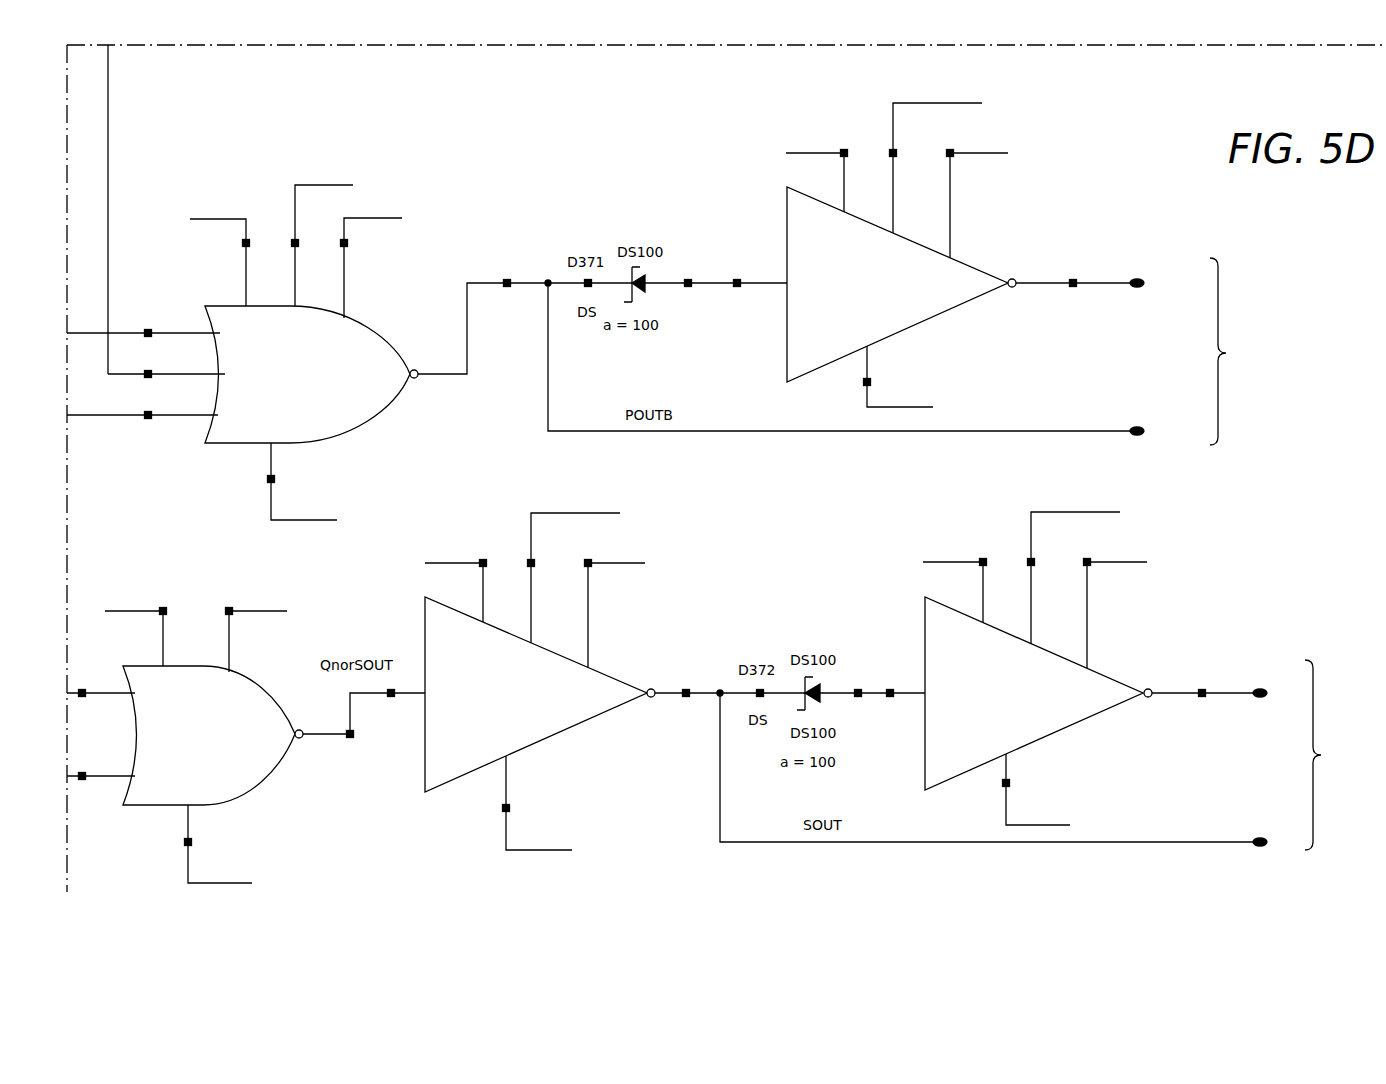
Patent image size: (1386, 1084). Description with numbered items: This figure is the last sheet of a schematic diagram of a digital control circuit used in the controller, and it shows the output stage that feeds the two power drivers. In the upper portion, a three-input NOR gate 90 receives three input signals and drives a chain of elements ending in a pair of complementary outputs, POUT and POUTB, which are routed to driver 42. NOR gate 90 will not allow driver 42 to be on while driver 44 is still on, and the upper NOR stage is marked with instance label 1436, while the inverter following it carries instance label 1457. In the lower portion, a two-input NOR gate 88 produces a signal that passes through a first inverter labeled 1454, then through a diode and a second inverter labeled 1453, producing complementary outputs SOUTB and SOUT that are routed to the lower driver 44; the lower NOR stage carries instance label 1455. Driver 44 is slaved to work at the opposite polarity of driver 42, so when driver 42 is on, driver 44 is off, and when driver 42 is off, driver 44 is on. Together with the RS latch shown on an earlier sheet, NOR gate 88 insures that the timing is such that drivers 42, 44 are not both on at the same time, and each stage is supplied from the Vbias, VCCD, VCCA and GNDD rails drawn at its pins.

The three-input NOR gate NOR_31 1436 is at (254, 341).
The NOR gate 90 is at (373, 417).
The SOUT inverter 1457 is at (912, 244).
The driver 42 is at (1158, 351).
The two-input NOR gate Sout_2_nor 1455 is at (197, 736).
The NOR gate 88 is at (262, 783).
The SOUT inverter 1454 is at (550, 671).
The SOUT inverter 1453 is at (1048, 658).
The lower driver 44 is at (1264, 755).